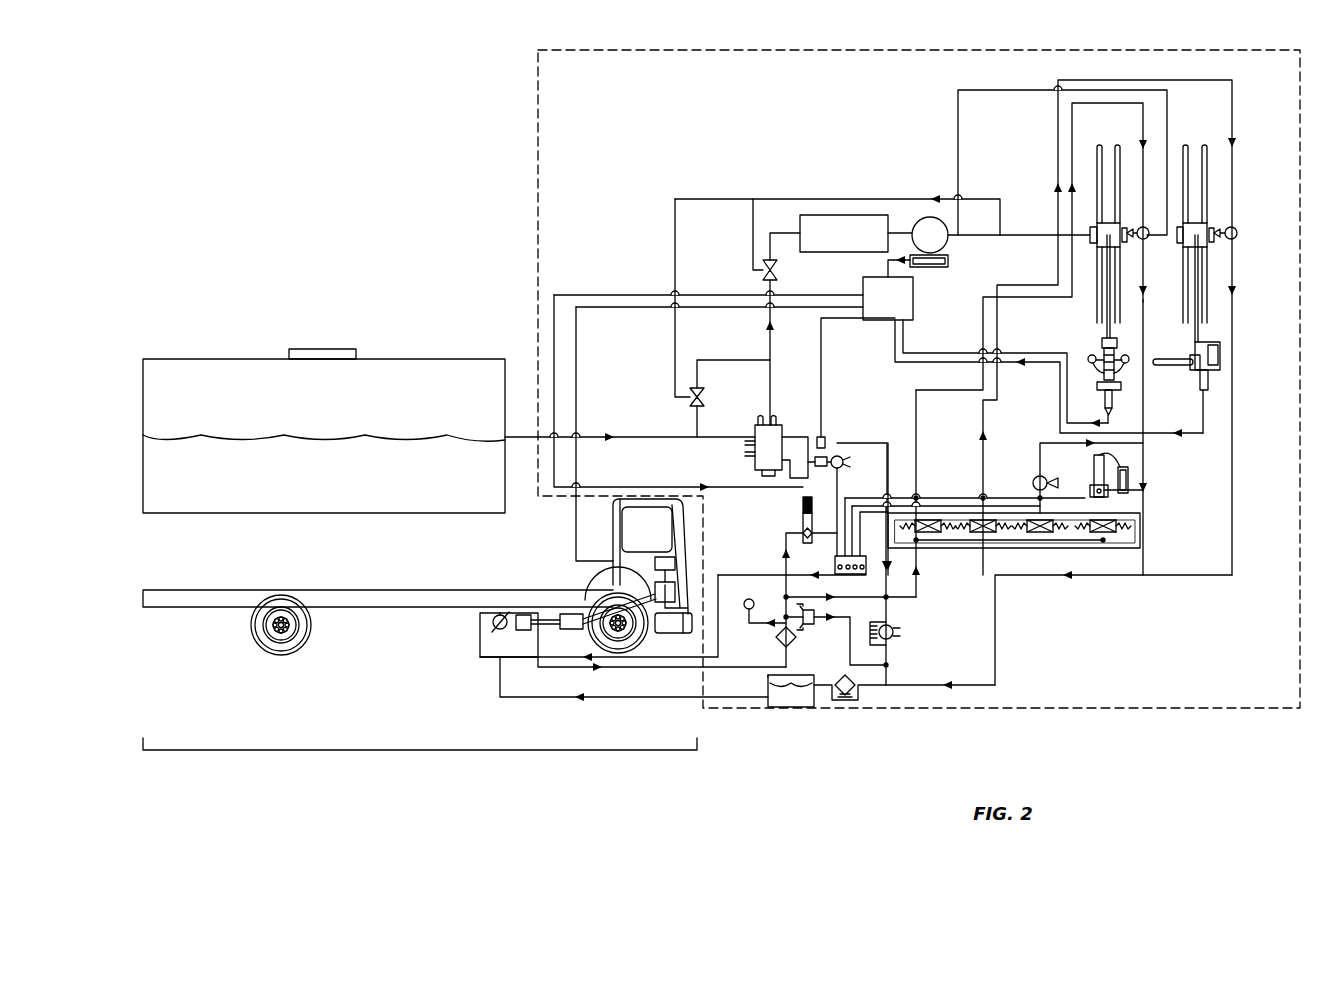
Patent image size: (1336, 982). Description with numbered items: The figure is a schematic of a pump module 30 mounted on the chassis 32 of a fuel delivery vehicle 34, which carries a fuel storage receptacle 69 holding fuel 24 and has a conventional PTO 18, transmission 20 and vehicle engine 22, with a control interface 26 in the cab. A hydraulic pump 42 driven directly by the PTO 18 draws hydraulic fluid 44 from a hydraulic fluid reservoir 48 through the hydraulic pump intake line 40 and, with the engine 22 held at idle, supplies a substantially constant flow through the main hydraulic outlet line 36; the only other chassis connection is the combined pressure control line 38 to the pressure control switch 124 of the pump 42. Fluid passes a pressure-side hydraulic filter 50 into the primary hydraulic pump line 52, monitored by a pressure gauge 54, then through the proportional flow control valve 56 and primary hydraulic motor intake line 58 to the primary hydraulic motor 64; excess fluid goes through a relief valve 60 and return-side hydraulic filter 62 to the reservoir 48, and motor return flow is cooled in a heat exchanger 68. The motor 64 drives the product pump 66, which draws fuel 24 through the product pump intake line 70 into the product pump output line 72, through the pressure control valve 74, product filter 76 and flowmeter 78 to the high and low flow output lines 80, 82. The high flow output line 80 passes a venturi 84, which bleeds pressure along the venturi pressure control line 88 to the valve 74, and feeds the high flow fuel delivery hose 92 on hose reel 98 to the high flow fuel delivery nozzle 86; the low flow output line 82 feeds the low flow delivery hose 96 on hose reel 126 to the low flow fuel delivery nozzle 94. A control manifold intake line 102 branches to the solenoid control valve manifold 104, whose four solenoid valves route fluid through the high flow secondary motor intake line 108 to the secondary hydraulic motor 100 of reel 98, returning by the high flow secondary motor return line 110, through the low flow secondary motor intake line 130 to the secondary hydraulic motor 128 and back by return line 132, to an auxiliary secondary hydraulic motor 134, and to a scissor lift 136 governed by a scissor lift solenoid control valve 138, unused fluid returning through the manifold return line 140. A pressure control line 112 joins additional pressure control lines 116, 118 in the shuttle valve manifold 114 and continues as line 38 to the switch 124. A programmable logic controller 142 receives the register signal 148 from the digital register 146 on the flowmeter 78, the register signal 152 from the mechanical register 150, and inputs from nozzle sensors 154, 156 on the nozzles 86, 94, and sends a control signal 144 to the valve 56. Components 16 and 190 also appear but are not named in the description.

The pump module 30 is at (988, 36).
The fuel storage receptacle 69 is at (455, 359).
The fuel 24 is at (452, 479).
The chassis 32 is at (583, 588).
The control interface 26 is at (655, 565).
The vehicle engine 22 is at (675, 592).
The fuel delivery vehicle 34 is at (440, 752).
The combined pressure control line 38 is at (480, 640).
The pressure control switch 124 is at (493, 623).
The hydraulic pump 42 is at (496, 614).
The main hydraulic outlet line 36 is at (518, 615).
The transmission 20 is at (572, 614).
The PTO 18 is at (548, 627).
The hydraulic pump intake line 40 is at (612, 698).
The hydraulic fluid 44 is at (781, 704).
The hydraulic fluid reservoir 48 is at (768, 678).
The return-side hydraulic filter 62 is at (858, 693).
The pressure-side hydraulic filter 50 is at (780, 645).
The pressure gauge 54 is at (752, 600).
The relief valve 60 is at (815, 625).
The heat exchanger 68 is at (893, 638).
The control manifold intake line 102 is at (918, 590).
The primary hydraulic pump line 52 is at (786, 541).
The shuttle valve manifold 114 is at (835, 566).
The pressure control line 112 is at (861, 546).
The proportional flow control valve 56 is at (800, 505).
The hydraulic pump 16 is at (812, 527).
The product pump intake line 70 is at (648, 437).
The control signal 144 is at (718, 295).
The nozzle sensor 156 is at (576, 515).
The bypass valve 190 is at (704, 400).
The product pump output line 72 is at (772, 342).
The pressure control valve 74 is at (777, 273).
The product filter 76 is at (818, 253).
The venturi pressure control line 88 is at (825, 199).
The flowmeter 78 is at (946, 247).
The digital register 146 is at (940, 268).
The register signal 148 is at (885, 262).
The programmable logic controller 142 is at (874, 307).
The low flow output line 82 is at (960, 152).
The high flow output line 80 is at (1050, 232).
The venturi 84 is at (1004, 238).
The high flow secondary motor intake line 108 is at (918, 450).
The low flow secondary motor intake line 130 is at (985, 420).
The low flow secondary motor return line 132 is at (1232, 430).
The product pump 66 is at (775, 425).
The primary hydraulic motor intake line 58 is at (830, 469).
The primary hydraulic motor 64 is at (845, 461).
The mechanical register 150 is at (825, 438).
The register signal 152 is at (825, 345).
The additional pressure control line 118 is at (840, 500).
The additional pressure control line 116 is at (880, 500).
The solenoid control valve manifold 104 is at (958, 548).
The solenoid control valve manifold return line 140 is at (1075, 548).
The auxiliary secondary hydraulic motor 134 is at (1040, 476).
The scissor lift solenoid control valve 138 is at (1094, 472).
The scissor lift 136 is at (1130, 470).
The hose reel 98 is at (1099, 150).
The high flow fuel delivery hose 92 is at (1110, 336).
The secondary hydraulic motor 100 is at (1147, 238).
The high flow fuel delivery nozzle 86 is at (1102, 340).
The nozzle sensor 154 is at (1100, 401).
The hose reel 126 is at (1186, 150).
The low flow delivery hose 96 is at (1198, 338).
The secondary hydraulic motor 128 is at (1236, 237).
The low flow fuel delivery nozzle 94 is at (1195, 350).
The high flow secondary motor return line 110 is at (1143, 395).